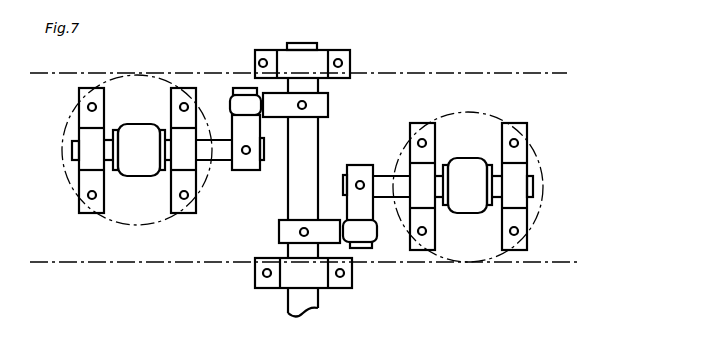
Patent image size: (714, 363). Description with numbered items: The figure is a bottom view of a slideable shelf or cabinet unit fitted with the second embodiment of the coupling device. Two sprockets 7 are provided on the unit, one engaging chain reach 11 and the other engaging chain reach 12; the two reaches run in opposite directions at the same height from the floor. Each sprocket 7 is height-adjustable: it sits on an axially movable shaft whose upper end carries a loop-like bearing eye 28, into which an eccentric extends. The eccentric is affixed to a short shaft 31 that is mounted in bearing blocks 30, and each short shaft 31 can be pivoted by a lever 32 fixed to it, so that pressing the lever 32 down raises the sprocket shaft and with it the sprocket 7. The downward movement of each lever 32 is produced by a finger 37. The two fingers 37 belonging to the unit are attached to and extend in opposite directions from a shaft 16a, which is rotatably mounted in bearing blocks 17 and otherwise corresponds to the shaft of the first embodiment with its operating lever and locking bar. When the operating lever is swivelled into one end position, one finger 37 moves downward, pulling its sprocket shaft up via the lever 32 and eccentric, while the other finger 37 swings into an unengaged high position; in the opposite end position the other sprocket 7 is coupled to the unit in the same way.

The sprocket 7 is at (73, 128).
The chain reach 11 is at (435, 73).
The chain reach 12 is at (537, 263).
The shaft 16a is at (310, 299).
The bearing block 17 is at (312, 57).
The bearing eye 28 is at (467, 200).
The bearing block 30 is at (90, 180).
The short shaft 31 is at (226, 144).
The lever 32 is at (357, 168).
The finger 37 is at (240, 102).